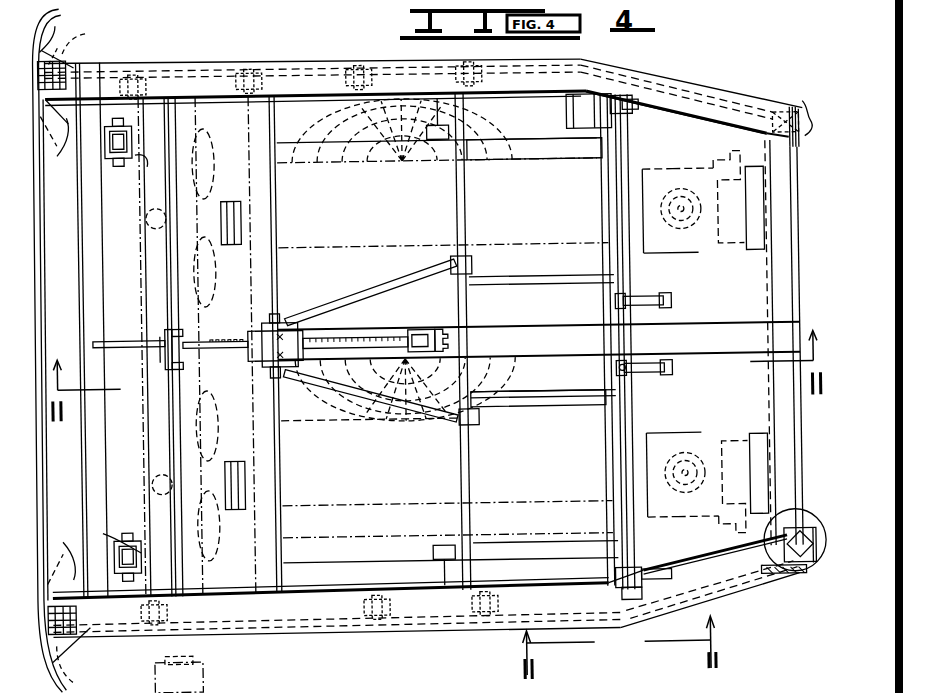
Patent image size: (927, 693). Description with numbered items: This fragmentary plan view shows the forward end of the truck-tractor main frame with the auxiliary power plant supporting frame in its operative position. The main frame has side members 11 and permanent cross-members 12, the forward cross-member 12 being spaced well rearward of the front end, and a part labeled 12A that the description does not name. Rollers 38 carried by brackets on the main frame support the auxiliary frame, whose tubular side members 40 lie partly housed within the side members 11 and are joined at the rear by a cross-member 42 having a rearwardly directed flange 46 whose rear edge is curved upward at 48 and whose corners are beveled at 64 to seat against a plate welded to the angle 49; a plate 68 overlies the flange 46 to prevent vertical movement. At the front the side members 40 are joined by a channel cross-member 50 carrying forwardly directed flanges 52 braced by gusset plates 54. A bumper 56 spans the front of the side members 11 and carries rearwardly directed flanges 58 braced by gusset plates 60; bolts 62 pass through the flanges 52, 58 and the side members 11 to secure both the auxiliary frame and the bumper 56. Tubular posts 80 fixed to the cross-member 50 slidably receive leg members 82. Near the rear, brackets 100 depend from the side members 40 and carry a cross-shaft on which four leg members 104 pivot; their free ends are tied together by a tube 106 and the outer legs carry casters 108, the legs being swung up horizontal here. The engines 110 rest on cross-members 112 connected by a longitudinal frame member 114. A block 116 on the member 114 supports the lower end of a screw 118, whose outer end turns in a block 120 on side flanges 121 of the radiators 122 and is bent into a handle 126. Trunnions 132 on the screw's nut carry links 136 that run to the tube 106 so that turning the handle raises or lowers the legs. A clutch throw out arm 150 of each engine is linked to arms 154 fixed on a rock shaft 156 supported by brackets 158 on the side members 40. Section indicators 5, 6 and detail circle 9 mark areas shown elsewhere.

The frame side member 11 is at (292, 62).
The cross-member 12 is at (806, 110).
The rail channel 12A is at (150, 90).
The roller 38 is at (256, 66).
The side member 40 is at (222, 100).
The cross-member 42 is at (786, 388).
The flange 46 is at (780, 362).
The upwardly curved edge portion 48 is at (782, 308).
The angle 49 is at (778, 284).
The front cross-member 50 is at (84, 488).
The flange member 52 is at (58, 353).
The gusset plate 54 is at (61, 349).
The bumper 56 is at (46, 272).
The flange 58 is at (74, 62).
The gusset plate 60 is at (58, 40).
The bolt 62 is at (92, 664).
The beveled corner 64 is at (806, 582).
The plate 68 is at (770, 140).
The tubular post 80 is at (136, 134).
The leg member 82 is at (78, 528).
The bracket 100 is at (638, 132).
The leg member 104 is at (540, 140).
The tube 106 is at (470, 222).
The caster 108 is at (436, 140).
The engine 110 is at (250, 243).
The cross-member 112 is at (274, 292).
The auxiliary frame member 114 is at (690, 332).
The block 116 is at (420, 329).
The screw 118 is at (344, 336).
The block 120 is at (168, 358).
The side flange 121 is at (166, 338).
The radiator 122 is at (142, 270).
The handle 126 is at (104, 336).
The trunnion 132 is at (290, 316).
The link 136 is at (392, 286).
The clutch throw out arm 150 is at (616, 340).
The arm 154 is at (650, 308).
The rock shaft 156 is at (640, 434).
The bracket 158 is at (612, 96).
The section line 5 is at (436, 368).
The section line 6 is at (612, 648).
The detail circle 9 is at (786, 584).